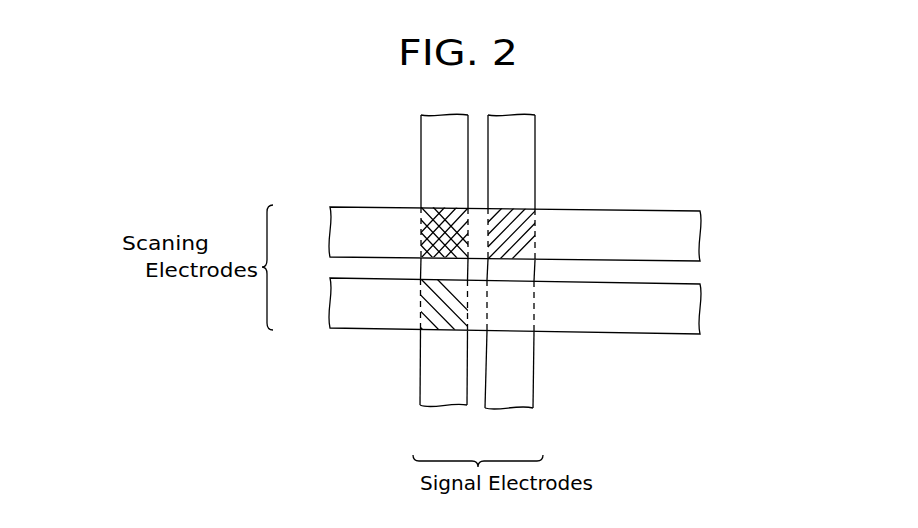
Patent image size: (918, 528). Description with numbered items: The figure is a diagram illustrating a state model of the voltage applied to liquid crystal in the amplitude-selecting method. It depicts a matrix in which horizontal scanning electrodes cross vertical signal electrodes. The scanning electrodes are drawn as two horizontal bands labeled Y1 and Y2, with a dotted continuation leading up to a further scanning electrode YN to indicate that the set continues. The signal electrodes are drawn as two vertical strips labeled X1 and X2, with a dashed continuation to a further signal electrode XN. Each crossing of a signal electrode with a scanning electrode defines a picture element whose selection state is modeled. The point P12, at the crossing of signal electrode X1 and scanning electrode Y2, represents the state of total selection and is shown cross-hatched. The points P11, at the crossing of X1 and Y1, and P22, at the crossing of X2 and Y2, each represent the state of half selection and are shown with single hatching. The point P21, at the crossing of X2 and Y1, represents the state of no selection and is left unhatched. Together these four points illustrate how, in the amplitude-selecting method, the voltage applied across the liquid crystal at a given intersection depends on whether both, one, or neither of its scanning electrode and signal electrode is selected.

The scanning electrode YN is at (295, 205).
The scanning electrode Y2 is at (490, 234).
The scanning electrode Y1 is at (490, 306).
The signal electrode X1 is at (444, 285).
The signal electrode X2 is at (510, 285).
The signal electrode XN is at (540, 445).
The half selection state point P11 is at (430, 304).
The total selection state point P12 is at (439, 232).
The no selection state point P21 is at (512, 309).
The half selection state point P22 is at (507, 233).